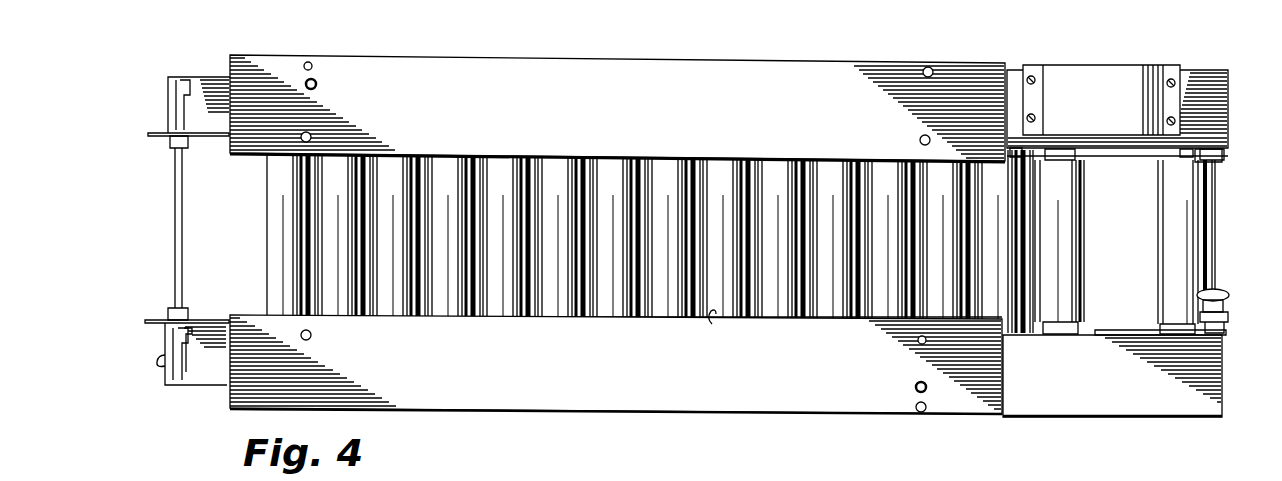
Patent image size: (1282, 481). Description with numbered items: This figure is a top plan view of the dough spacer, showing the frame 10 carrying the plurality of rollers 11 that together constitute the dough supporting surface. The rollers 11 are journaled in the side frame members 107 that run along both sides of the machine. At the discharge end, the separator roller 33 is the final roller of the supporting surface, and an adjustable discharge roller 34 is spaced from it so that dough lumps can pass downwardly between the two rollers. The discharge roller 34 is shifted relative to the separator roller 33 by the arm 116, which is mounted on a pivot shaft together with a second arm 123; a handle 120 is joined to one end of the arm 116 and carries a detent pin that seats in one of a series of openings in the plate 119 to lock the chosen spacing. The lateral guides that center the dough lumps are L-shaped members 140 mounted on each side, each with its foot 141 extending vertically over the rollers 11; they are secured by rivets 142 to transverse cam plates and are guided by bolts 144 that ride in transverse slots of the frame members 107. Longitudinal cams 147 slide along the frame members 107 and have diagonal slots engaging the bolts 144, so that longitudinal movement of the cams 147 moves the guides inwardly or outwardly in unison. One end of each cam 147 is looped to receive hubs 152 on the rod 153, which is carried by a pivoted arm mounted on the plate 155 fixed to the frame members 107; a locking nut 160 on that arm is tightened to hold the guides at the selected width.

The frame 10 is at (230, 190).
The rollers 11 is at (272, 236).
The separator roller 33 is at (1060, 251).
The discharge roller 34 is at (1195, 230).
The side frame members 107 is at (1212, 104).
The arm 116 is at (1224, 330).
The plate 119 is at (1125, 330).
The handle 120 is at (1222, 291).
The arm 123 is at (1224, 158).
The L-shaped members 140 is at (478, 72).
The foot 141 is at (727, 326).
The rivets 142 is at (314, 67).
The bolts 144 is at (317, 86).
The longitudinal cams 147 is at (213, 84).
The hubs 152 is at (196, 330).
The rod 153 is at (172, 262).
The plate 155 is at (158, 137).
The locking nut 160 is at (160, 364).